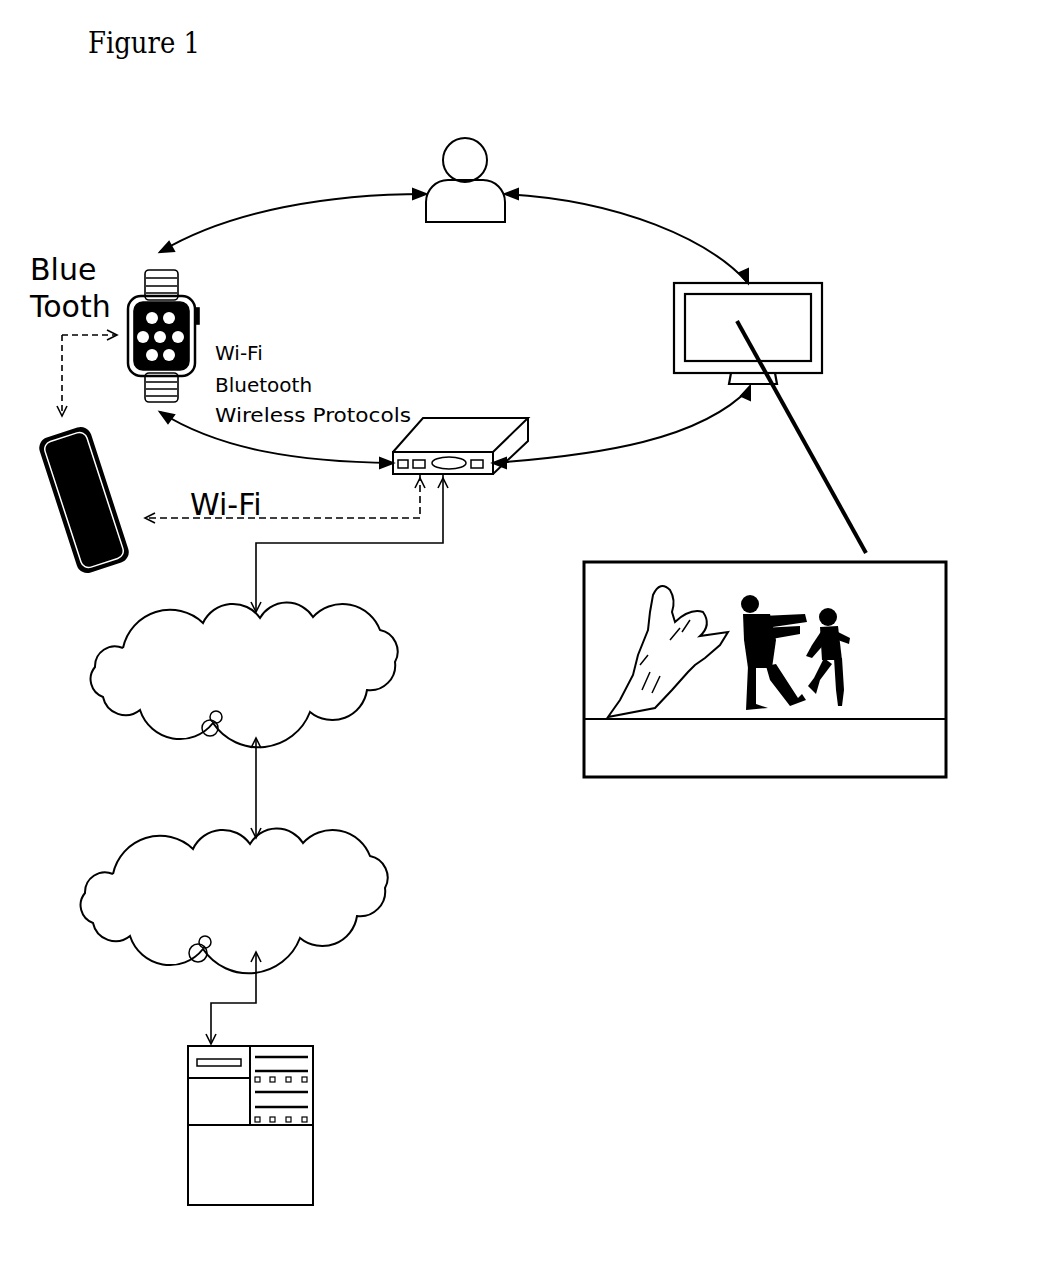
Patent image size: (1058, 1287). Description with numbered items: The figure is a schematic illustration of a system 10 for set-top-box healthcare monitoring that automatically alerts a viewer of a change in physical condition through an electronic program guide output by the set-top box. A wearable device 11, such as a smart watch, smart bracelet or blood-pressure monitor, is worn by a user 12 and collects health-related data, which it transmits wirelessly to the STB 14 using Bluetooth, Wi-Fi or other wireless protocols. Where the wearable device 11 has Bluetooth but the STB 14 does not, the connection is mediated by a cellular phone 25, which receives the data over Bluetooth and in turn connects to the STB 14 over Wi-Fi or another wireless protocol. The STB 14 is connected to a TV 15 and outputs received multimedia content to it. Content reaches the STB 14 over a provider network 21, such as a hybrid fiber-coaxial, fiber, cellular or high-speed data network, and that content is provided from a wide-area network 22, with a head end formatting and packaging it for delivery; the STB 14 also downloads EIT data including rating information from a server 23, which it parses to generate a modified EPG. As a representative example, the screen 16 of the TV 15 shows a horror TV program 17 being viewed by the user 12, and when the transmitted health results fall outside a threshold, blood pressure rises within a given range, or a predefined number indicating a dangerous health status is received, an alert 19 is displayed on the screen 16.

The system for STB healthcare monitoring 10 is at (167, 167).
The wearable device 11 is at (190, 317).
The user 12 is at (493, 170).
The STB 14 is at (448, 418).
The TV 15 is at (781, 331).
The screen 16 is at (765, 338).
The horror TV program 17 is at (765, 706).
The alert 19 is at (765, 777).
The provider network 21 is at (413, 672).
The wide-area network (WAN) 22 is at (405, 895).
The server 23 is at (313, 1103).
The cellular phone 25 is at (63, 543).